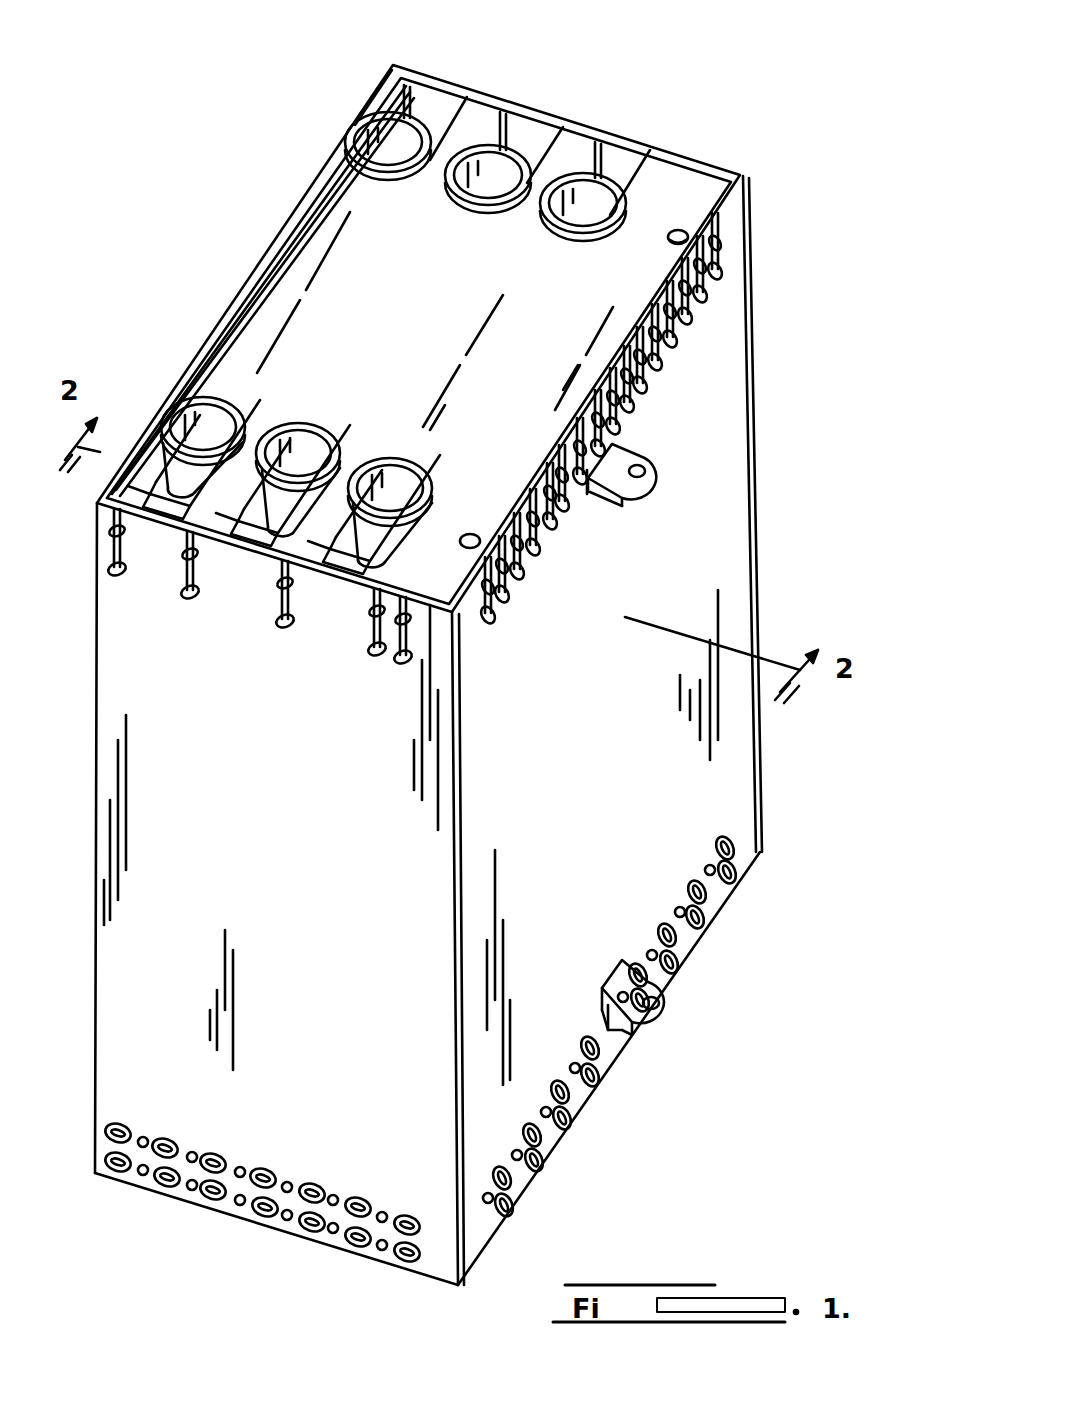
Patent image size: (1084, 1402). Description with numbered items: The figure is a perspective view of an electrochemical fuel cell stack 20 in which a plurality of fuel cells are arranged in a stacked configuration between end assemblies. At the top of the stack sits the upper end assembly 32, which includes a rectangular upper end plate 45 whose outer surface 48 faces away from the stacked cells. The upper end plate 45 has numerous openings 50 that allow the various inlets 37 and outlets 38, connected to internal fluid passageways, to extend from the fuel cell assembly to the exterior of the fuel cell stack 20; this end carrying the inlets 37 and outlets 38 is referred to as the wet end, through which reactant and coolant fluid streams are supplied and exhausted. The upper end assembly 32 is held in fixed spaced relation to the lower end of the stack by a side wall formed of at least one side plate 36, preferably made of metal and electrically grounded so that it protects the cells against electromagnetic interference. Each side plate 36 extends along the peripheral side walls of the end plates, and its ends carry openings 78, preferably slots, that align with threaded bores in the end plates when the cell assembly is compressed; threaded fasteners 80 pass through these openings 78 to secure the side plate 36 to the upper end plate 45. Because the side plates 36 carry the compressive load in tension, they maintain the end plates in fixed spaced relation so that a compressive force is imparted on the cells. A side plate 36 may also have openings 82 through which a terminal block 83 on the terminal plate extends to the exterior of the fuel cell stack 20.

The electrochemical fuel cell stack 20 is at (737, 82).
The upper end assembly 32 is at (700, 200).
The side plate 36 is at (722, 328).
The inlets 37 is at (240, 425).
The outlets 38 is at (560, 225).
The upper end plate 45 is at (295, 268).
The outer surface 48 is at (255, 325).
The openings 50 is at (427, 95).
The openings 78 is at (598, 448).
The threaded fasteners 80 is at (728, 250).
The openings 82 is at (592, 494).
The terminal block 83 is at (652, 472).